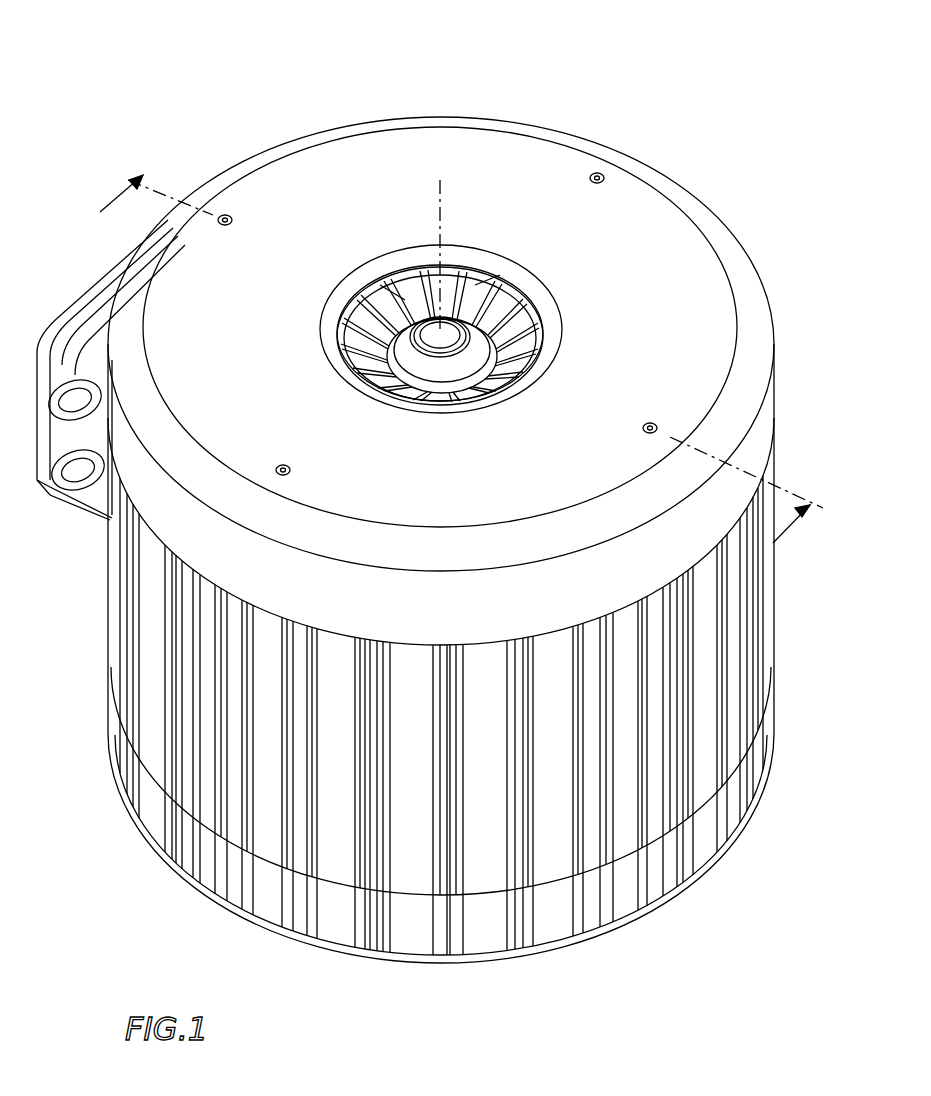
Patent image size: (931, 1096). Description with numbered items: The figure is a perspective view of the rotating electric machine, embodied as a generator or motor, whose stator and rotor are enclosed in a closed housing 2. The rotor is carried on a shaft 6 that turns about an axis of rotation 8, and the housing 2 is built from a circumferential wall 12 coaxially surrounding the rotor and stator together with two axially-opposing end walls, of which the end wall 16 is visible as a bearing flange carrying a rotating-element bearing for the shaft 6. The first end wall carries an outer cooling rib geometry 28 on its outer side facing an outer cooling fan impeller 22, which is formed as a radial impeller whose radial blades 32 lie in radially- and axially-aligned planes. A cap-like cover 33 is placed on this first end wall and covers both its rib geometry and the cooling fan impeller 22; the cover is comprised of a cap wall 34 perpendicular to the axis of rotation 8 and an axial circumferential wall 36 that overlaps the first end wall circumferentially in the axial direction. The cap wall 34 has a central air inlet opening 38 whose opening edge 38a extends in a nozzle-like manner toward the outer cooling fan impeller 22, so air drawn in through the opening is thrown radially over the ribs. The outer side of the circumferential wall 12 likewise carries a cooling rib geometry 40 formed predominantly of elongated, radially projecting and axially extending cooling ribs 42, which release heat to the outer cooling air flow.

The housing 2 is at (441, 536).
The shaft 6 is at (457, 372).
The axis of rotation 8 is at (443, 207).
The circumferential wall 12 is at (480, 842).
The end wall 16 is at (328, 958).
The outer cooling fan impeller 22 is at (522, 348).
The outer cooling rib geometry 28 is at (482, 278).
The radial blades 32 is at (527, 310).
The cap-like cover 33 is at (325, 178).
The cap wall 34 is at (686, 258).
The axial circumferential wall 36 is at (762, 456).
The air inlet opening 38 is at (400, 255).
The opening edge 38a is at (345, 302).
The cooling rib geometry 40 is at (118, 645).
The cooling ribs 42 is at (180, 622).